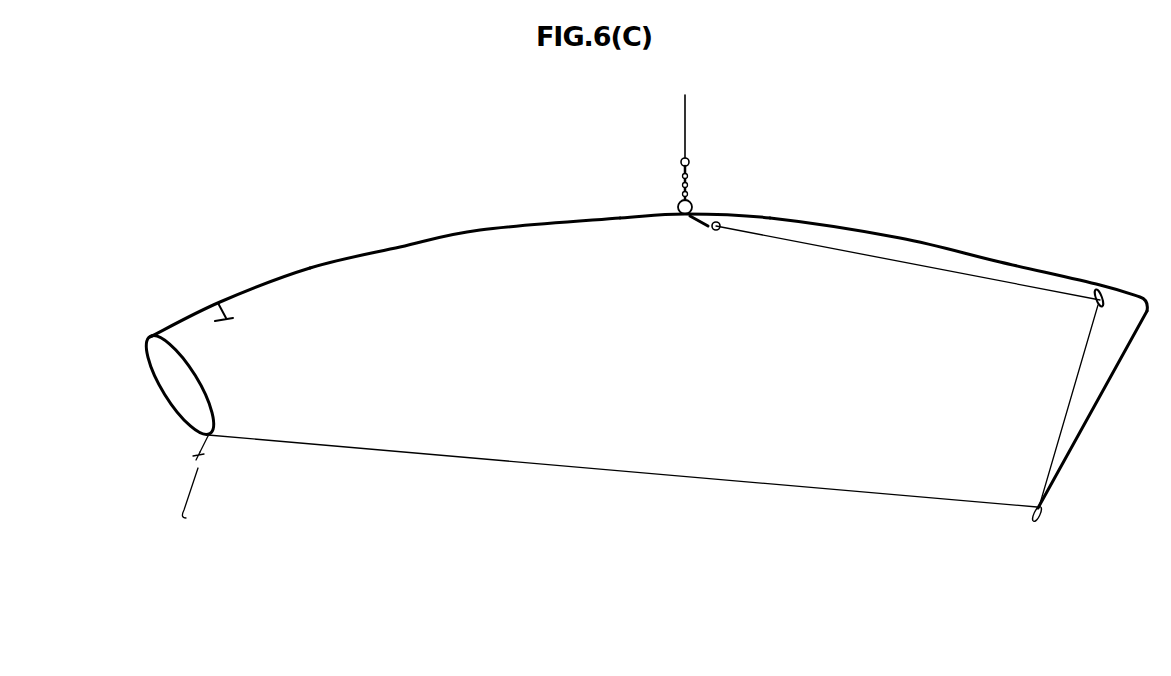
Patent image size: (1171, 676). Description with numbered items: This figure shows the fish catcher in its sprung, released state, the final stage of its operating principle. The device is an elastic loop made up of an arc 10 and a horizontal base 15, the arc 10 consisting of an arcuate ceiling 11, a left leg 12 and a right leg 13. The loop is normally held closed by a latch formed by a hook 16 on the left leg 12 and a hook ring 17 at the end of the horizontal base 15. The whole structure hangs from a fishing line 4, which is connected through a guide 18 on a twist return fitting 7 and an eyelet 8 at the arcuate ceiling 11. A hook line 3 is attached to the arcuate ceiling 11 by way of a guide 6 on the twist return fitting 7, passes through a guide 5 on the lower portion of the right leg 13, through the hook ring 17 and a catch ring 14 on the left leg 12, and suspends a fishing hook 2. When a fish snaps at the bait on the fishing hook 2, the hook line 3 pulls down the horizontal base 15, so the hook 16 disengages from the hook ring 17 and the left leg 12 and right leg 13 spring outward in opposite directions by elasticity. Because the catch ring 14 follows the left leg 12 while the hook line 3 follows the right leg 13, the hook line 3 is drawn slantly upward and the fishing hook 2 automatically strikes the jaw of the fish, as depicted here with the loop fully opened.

The fishing hook 2 is at (186, 521).
The hook line 3 is at (634, 470).
The fishing line 4 is at (688, 126).
The guide 5 is at (1091, 285).
The guide 6 is at (720, 231).
The twist return fitting 7 is at (689, 180).
The eyelet 8 is at (694, 207).
The arc 10 is at (481, 231).
The arcuate ceiling 11 is at (623, 217).
The left leg 12 is at (309, 266).
The right leg 13 is at (925, 240).
The catch ring 14 is at (162, 392).
The horizontal base 15 is at (1090, 418).
The hook 16 is at (231, 318).
The hook ring 17 is at (1035, 528).
The guide 18 is at (681, 161).